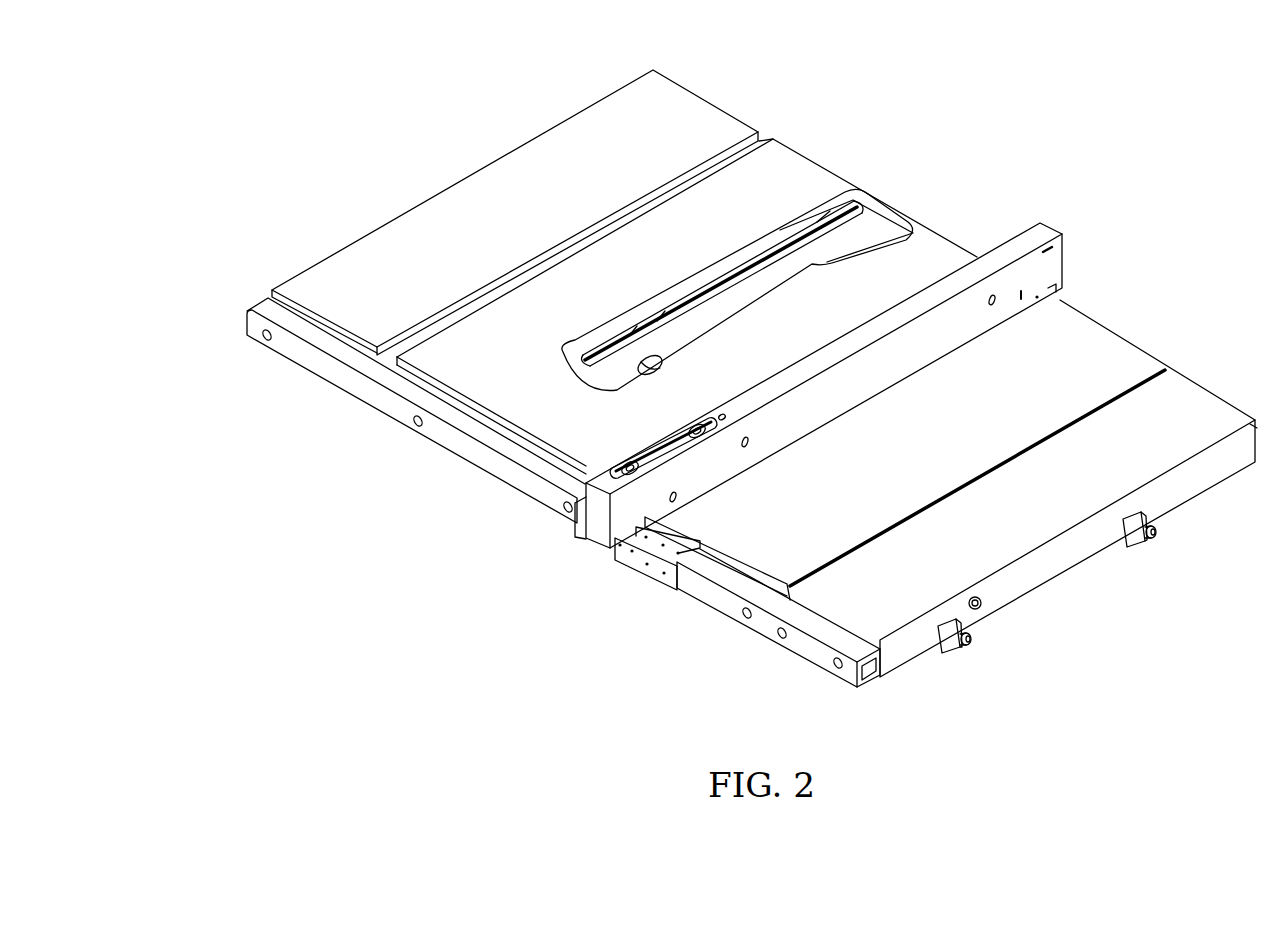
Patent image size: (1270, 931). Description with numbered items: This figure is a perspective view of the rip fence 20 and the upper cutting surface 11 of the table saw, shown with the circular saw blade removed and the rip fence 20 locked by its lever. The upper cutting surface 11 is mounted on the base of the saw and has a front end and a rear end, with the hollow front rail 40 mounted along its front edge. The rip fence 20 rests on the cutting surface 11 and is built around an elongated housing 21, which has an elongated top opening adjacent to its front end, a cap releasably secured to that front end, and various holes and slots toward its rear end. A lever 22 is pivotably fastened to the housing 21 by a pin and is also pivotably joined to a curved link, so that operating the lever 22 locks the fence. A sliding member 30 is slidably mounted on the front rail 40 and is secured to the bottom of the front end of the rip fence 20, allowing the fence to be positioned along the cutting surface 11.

The upper cutting surface 11 is at (440, 222).
The rip fence 20 is at (1068, 242).
The elongated housing 21 is at (845, 385).
The lever 22 is at (660, 450).
The sliding member 30 is at (640, 555).
The hollow front rail 40 is at (320, 365).